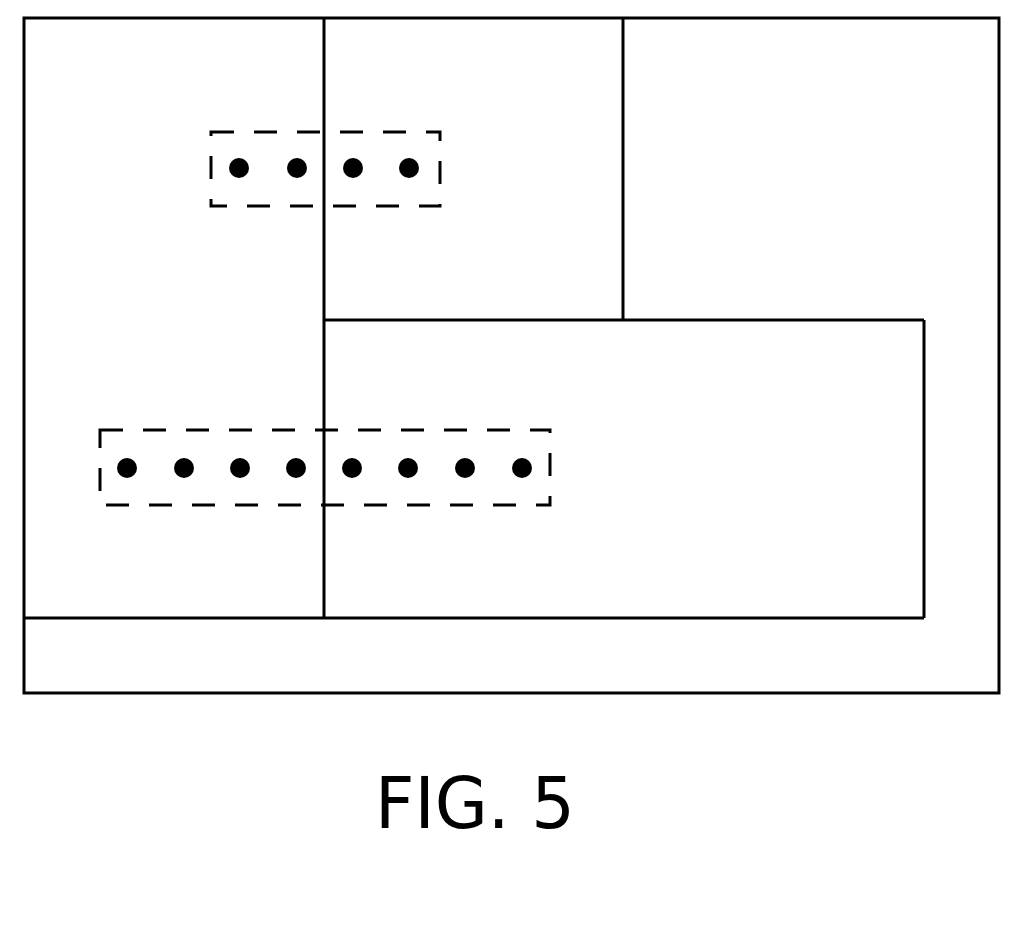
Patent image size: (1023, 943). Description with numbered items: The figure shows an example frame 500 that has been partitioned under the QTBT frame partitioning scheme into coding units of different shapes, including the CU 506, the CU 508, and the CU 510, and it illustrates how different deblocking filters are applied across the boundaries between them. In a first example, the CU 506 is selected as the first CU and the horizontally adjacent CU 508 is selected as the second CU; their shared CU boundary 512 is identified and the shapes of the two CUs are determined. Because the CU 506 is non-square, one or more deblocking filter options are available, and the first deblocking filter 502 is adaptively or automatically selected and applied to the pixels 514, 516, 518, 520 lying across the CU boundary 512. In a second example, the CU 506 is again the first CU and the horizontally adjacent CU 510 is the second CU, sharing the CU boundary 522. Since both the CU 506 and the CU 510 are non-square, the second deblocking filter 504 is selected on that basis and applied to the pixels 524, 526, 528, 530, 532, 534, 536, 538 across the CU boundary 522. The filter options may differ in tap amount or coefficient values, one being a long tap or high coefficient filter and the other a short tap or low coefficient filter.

The frame 500 is at (536, 740).
The first deblocking filter 502 is at (442, 150).
The second deblocking filter 504 is at (297, 372).
The CU 506 is at (117, 54).
The CU 508 is at (610, 52).
The CU 510 is at (912, 354).
The CU boundary 512 is at (322, 243).
The pixel 514 is at (240, 160).
The pixel 516 is at (296, 177).
The pixel 518 is at (352, 178).
The pixel 520 is at (408, 158).
The CU boundary 522 is at (536, 612).
The pixel 524 is at (127, 458).
The pixel 526 is at (184, 478).
The pixel 528 is at (240, 458).
The pixel 530 is at (296, 478).
The pixel 532 is at (352, 478).
The pixel 534 is at (408, 458).
The pixel 536 is at (465, 478).
The pixel 538 is at (522, 458).